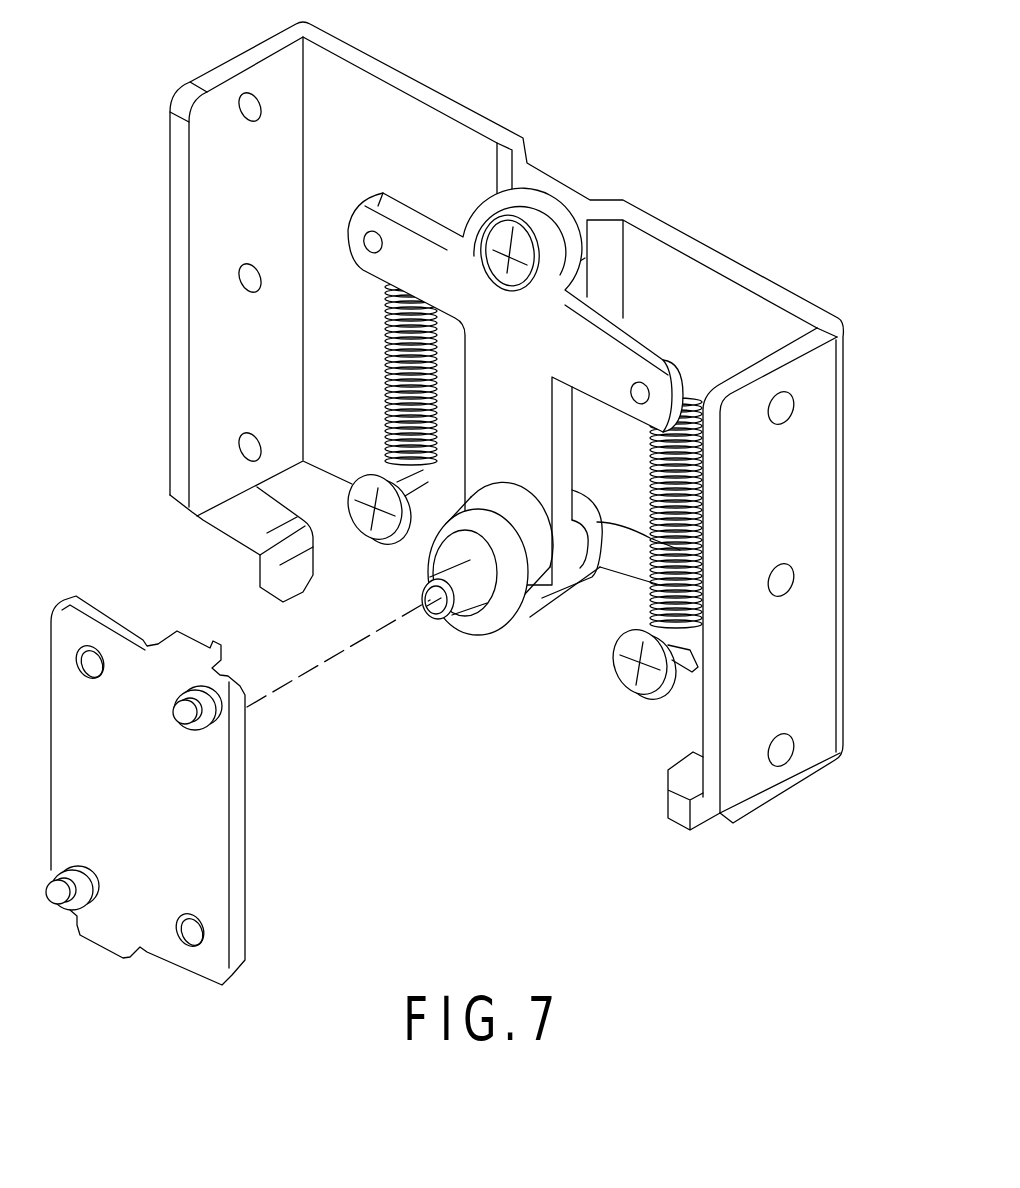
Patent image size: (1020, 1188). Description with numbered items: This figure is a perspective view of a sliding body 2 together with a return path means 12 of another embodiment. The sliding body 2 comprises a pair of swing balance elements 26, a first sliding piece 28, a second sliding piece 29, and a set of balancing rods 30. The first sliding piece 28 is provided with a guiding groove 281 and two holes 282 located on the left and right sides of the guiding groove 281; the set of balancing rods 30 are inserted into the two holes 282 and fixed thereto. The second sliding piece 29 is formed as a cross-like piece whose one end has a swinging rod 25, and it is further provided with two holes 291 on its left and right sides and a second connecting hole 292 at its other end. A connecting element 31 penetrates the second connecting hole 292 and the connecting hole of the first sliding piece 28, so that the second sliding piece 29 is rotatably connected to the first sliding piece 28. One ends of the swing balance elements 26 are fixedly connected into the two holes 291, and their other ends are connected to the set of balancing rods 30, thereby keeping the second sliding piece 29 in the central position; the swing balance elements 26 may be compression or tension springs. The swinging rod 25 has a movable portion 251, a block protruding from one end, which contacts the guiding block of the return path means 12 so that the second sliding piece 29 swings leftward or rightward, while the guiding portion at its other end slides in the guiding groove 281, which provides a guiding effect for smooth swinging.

The sliding body 2 is at (506, 426).
The return path means 12 is at (127, 627).
The swinging rod 25 is at (517, 636).
The movable portion 251 is at (440, 612).
The swing balance elements 26 is at (402, 360).
The first sliding piece 28 is at (635, 213).
The guiding groove 281 is at (630, 557).
The holes 282 is at (440, 600).
The second sliding piece 29 is at (368, 303).
The holes 291 is at (373, 246).
The second connecting hole 292 is at (522, 233).
The balancing rods 30 is at (380, 540).
The connecting element 31 is at (508, 245).